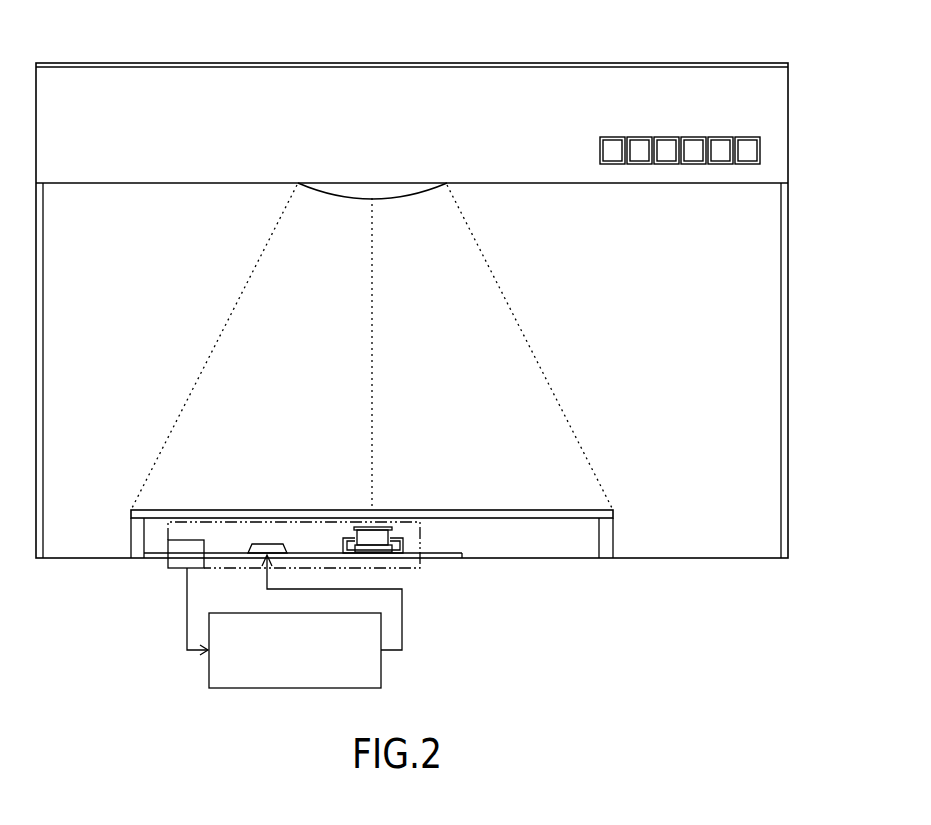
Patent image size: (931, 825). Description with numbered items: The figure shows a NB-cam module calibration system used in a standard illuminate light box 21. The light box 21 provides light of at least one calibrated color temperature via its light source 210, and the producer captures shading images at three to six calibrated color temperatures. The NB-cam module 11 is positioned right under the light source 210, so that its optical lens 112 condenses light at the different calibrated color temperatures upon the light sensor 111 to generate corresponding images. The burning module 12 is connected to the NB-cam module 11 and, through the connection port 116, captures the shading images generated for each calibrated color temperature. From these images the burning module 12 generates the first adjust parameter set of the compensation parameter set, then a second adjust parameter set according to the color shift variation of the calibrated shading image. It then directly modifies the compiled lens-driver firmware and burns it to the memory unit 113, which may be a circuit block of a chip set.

The standard illuminate light box 21 is at (681, 63).
The light source 210 is at (404, 184).
The NB-cam module 11 is at (315, 514).
The light sensor 111 is at (380, 537).
The optical lens 112 is at (378, 552).
The memory unit 113 is at (257, 544).
The connection port 116 is at (190, 540).
The burning module 12 is at (381, 668).